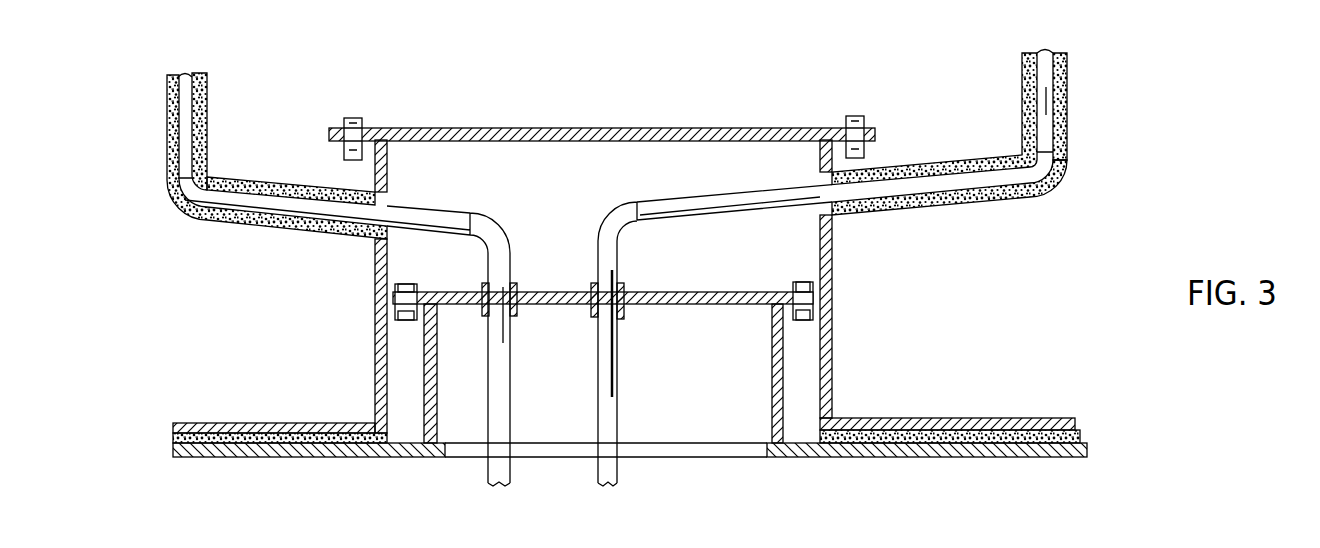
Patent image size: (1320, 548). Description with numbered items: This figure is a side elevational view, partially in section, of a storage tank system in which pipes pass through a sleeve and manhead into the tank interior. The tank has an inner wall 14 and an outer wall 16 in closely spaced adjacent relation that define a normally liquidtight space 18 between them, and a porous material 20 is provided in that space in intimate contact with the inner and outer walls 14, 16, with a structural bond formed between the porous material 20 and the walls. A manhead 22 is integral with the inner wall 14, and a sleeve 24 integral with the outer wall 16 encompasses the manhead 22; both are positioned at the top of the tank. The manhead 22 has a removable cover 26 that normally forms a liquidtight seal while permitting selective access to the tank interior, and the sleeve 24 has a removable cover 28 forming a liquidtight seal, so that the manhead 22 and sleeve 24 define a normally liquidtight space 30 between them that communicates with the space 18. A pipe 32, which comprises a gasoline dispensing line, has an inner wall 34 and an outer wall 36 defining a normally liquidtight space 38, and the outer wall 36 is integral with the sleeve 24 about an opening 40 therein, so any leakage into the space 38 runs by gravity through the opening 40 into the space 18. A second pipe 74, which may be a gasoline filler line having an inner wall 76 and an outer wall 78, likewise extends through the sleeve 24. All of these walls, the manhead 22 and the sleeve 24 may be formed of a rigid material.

The inner wall 14 is at (945, 457).
The outer wall 16 is at (903, 423).
The normally liquidtight space 18 is at (1025, 423).
The porous material 20 is at (292, 188).
The manhead 22 is at (785, 372).
The sleeve 24 is at (833, 245).
The removable cover 26 is at (545, 292).
The removable cover 28 is at (463, 128).
The normally liquidtight space 30 is at (802, 333).
The pipe 32 is at (882, 268).
The inner wall 34 is at (1068, 115).
The outer wall 36 is at (1068, 83).
The normally liquidtight space 38 is at (1055, 194).
The opening 40 is at (817, 208).
The second pipe 74 is at (338, 272).
The inner wall 76 is at (233, 203).
The outer wall 78 is at (208, 150).